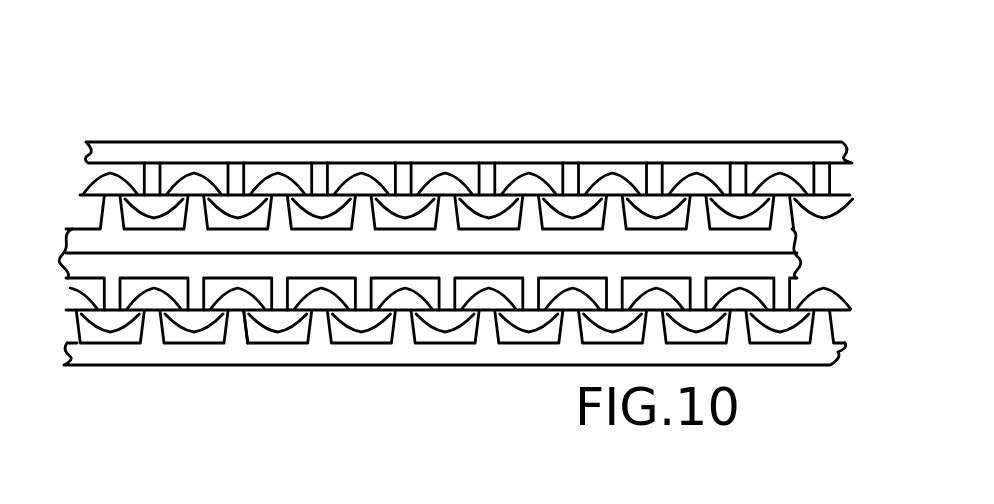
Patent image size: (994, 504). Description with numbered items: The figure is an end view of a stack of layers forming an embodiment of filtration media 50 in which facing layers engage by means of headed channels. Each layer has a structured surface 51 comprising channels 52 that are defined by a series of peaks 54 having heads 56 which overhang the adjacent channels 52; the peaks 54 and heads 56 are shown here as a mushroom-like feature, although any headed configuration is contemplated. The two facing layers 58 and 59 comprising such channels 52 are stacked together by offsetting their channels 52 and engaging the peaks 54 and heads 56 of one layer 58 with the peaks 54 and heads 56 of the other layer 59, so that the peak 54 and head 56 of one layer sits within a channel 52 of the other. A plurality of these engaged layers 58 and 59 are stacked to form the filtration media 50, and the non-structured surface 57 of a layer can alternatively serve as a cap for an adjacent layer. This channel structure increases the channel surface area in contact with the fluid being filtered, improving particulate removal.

The filtration media 50 is at (792, 113).
The structured surface 51 is at (102, 212).
The channels 52 is at (175, 335).
The peaks 54 is at (237, 329).
The heads 56 is at (275, 333).
The non-structured surface 57 is at (113, 142).
The layer 58 is at (793, 357).
The layer 59 is at (785, 262).